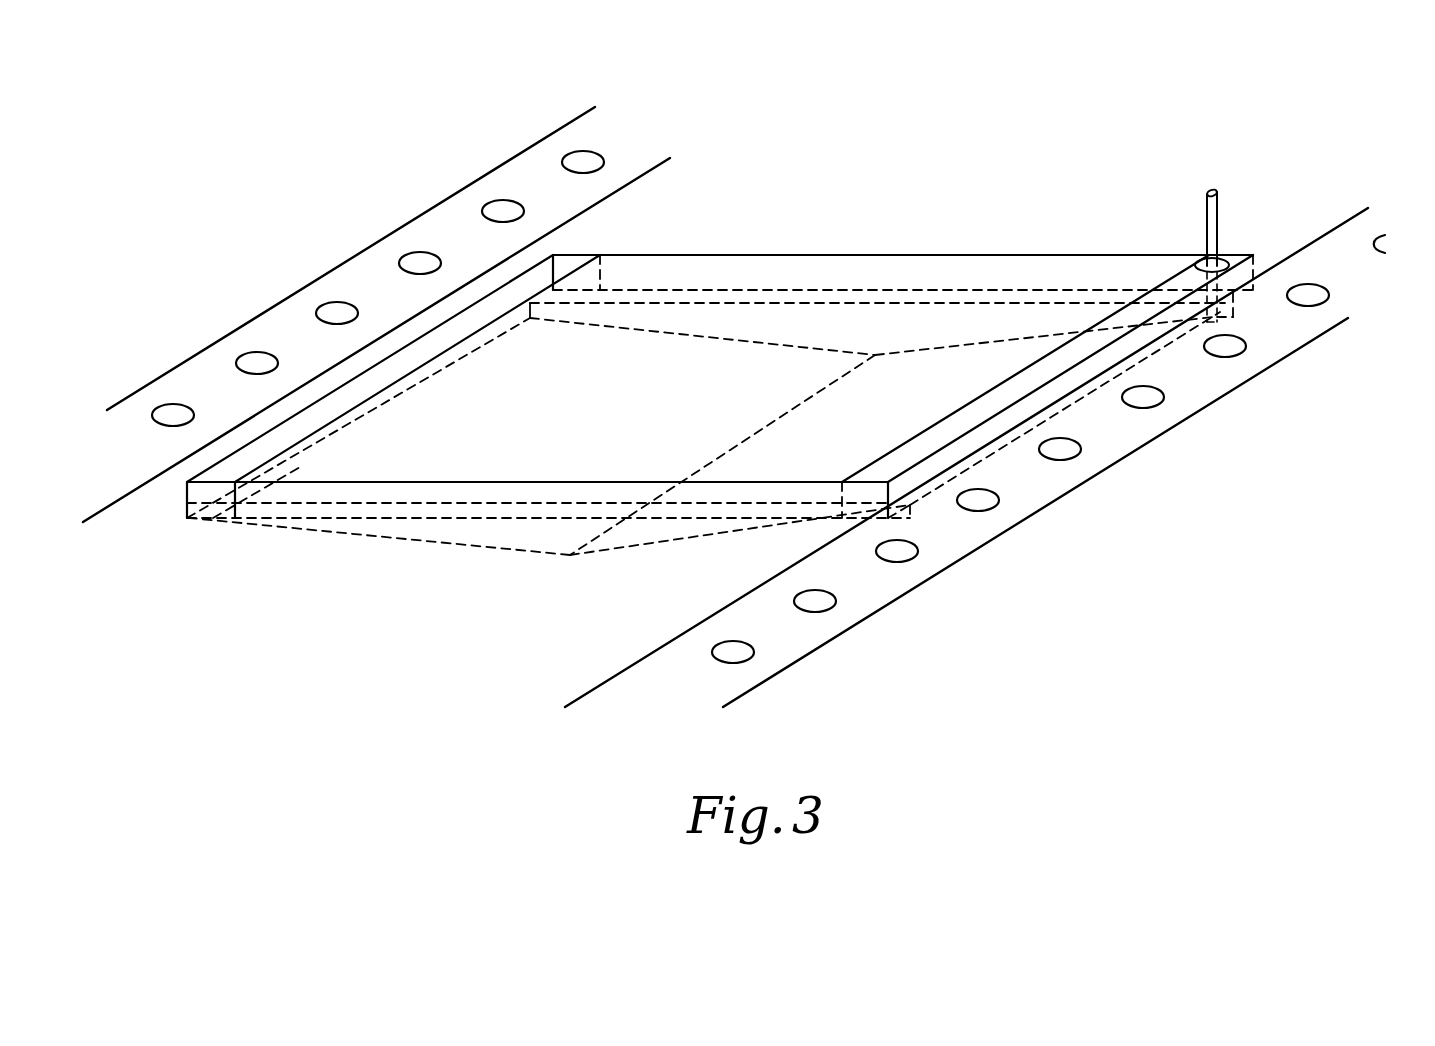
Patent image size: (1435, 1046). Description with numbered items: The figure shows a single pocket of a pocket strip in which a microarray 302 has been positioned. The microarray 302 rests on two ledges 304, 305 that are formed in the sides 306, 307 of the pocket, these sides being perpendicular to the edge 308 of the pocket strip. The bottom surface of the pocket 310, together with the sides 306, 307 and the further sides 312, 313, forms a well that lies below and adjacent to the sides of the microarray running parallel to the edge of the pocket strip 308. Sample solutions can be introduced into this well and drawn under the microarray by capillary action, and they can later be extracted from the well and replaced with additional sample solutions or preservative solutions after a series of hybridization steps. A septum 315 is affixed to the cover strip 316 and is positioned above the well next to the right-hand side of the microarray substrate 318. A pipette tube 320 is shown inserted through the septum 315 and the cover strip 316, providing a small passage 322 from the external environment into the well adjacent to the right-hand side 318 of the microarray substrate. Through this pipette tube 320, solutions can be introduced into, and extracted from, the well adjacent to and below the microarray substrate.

The microarray 302 is at (823, 272).
The ledge 304 is at (999, 295).
The ledge 305 is at (492, 510).
The side of the pocket 306 is at (733, 273).
The side of the pocket 307 is at (397, 490).
The edge of the pocket strip 308 is at (305, 286).
The bottom surface of the pocket 310 is at (740, 468).
The side of the pocket 312 is at (1238, 280).
The side of the pocket 313 is at (393, 372).
The septum 315 is at (1240, 255).
The cover strip 316 is at (639, 203).
The right-hand side of the microarray substrate 318 is at (936, 440).
The pipette tube 320 is at (1206, 228).
The passage 322 is at (1211, 200).